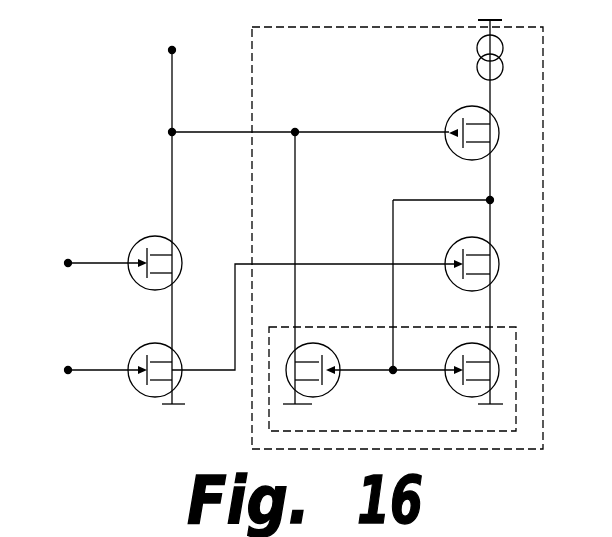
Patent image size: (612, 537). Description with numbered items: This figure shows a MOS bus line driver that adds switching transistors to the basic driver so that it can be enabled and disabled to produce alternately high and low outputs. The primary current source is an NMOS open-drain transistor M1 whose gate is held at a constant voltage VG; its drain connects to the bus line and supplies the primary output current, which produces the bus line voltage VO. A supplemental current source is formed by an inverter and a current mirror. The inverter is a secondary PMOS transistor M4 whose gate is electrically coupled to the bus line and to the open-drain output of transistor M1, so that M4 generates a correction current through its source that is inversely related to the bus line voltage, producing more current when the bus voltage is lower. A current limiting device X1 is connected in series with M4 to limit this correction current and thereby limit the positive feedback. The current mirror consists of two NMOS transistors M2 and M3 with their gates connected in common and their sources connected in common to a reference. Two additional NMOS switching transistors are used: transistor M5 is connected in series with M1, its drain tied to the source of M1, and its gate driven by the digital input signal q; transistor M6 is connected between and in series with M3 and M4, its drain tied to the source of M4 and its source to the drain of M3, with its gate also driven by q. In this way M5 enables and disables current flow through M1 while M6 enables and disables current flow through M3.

The bus line voltage VO is at (171, 33).
The constant voltage VG is at (84, 265).
The digital input signal q is at (89, 367).
The current limiting device X1 is at (507, 57).
The primary transistor M1 is at (140, 277).
The current mirror transistor M2 is at (327, 383).
The current mirror transistor M3 is at (457, 383).
The secondary PMOS transistor M4 is at (457, 146).
The switching transistor M5 is at (140, 383).
The switching transistor M6 is at (457, 277).